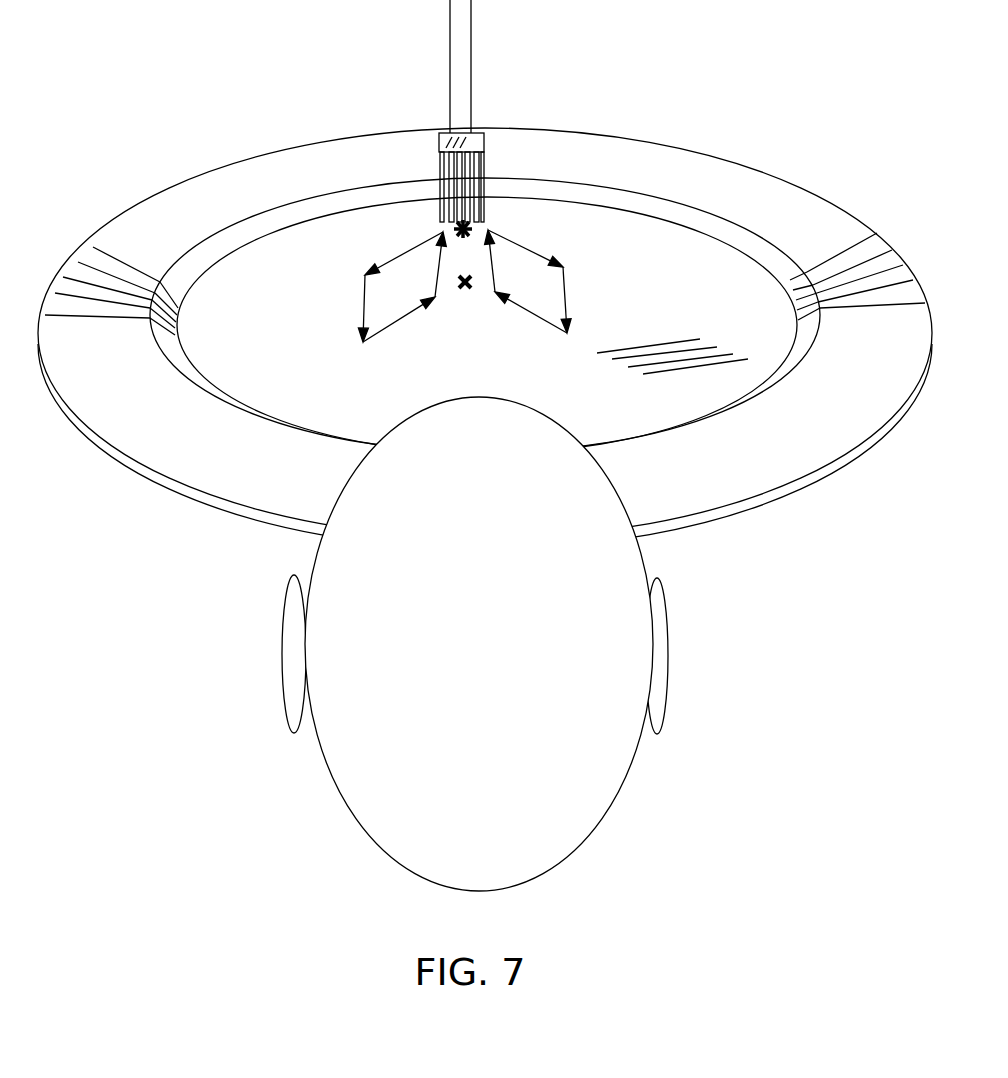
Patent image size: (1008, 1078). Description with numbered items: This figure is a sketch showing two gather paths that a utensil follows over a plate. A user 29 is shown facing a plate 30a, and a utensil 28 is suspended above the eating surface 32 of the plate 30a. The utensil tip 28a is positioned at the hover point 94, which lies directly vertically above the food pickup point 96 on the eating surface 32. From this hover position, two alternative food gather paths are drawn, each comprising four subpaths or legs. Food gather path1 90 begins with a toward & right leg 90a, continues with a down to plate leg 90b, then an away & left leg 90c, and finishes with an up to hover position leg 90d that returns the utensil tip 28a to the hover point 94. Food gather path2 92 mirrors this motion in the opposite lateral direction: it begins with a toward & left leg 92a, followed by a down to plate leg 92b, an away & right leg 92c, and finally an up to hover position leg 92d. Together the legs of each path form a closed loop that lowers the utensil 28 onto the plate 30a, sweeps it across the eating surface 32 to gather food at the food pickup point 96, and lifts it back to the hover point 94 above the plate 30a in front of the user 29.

The utensil 28 is at (488, 70).
The utensil tip 28a is at (470, 227).
The user 29 is at (610, 742).
The plate 30a is at (267, 173).
The eating surface 32 is at (270, 273).
The food gather path1 90 is at (562, 294).
The toward & right leg 90a is at (530, 248).
The down to plate leg 90b is at (567, 298).
The away & left leg 90c is at (542, 322).
The up to hover position leg 90d is at (492, 282).
The food gather path2 92 is at (381, 303).
The toward & left leg 92a is at (405, 250).
The down to plate leg 92b is at (364, 300).
The away & right leg 92c is at (405, 310).
The up to hover position leg 92d is at (440, 272).
The hover point 94 is at (458, 222).
The food pickup point 96 is at (463, 290).